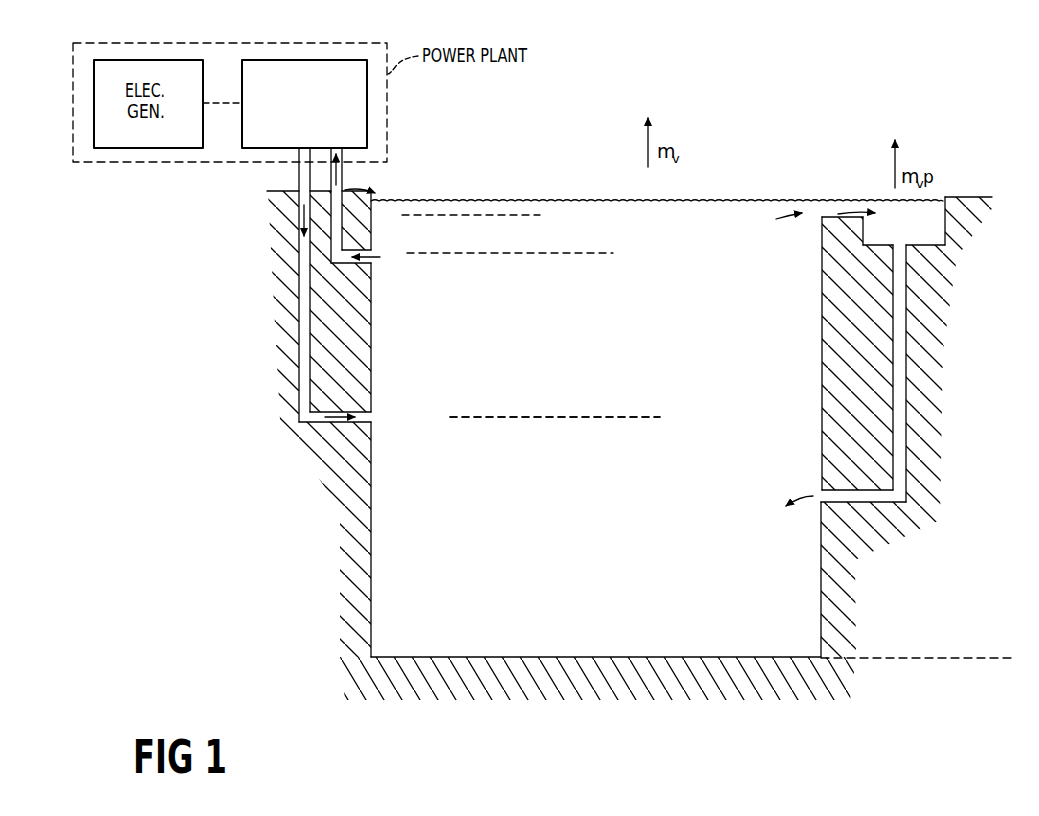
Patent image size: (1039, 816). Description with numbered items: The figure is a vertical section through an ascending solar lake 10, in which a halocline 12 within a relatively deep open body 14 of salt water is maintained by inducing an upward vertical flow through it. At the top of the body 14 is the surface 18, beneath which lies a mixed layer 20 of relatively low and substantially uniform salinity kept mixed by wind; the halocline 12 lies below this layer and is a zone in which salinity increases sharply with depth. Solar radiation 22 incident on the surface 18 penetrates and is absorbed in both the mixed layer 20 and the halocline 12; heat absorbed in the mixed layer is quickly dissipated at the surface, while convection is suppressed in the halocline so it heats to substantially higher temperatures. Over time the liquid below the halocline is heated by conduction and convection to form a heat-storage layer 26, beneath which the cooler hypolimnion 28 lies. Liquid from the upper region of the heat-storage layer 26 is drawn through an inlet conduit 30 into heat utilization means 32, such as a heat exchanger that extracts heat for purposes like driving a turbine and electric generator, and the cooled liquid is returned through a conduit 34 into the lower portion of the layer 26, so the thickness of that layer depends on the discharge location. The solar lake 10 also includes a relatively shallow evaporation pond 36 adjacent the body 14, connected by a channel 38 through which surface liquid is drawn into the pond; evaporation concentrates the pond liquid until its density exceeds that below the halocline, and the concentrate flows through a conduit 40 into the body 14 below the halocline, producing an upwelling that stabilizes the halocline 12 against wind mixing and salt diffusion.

The ascending solar lake 10 is at (770, 163).
The halocline 12 is at (548, 244).
The open body of salt water 14 is at (781, 597).
The surface 18 is at (692, 203).
The mixed layer 20 is at (437, 207).
The solar radiation 22 is at (720, 142).
The heat-storage layer 26 is at (647, 340).
The hypolimnion 28 is at (638, 542).
The inlet conduit 30 is at (343, 183).
The heat utilization means 32 is at (333, 60).
The discharge conduit 34 is at (370, 418).
The evaporation pond 36 is at (929, 221).
The channel 38 is at (830, 210).
The conduit 40 is at (898, 357).